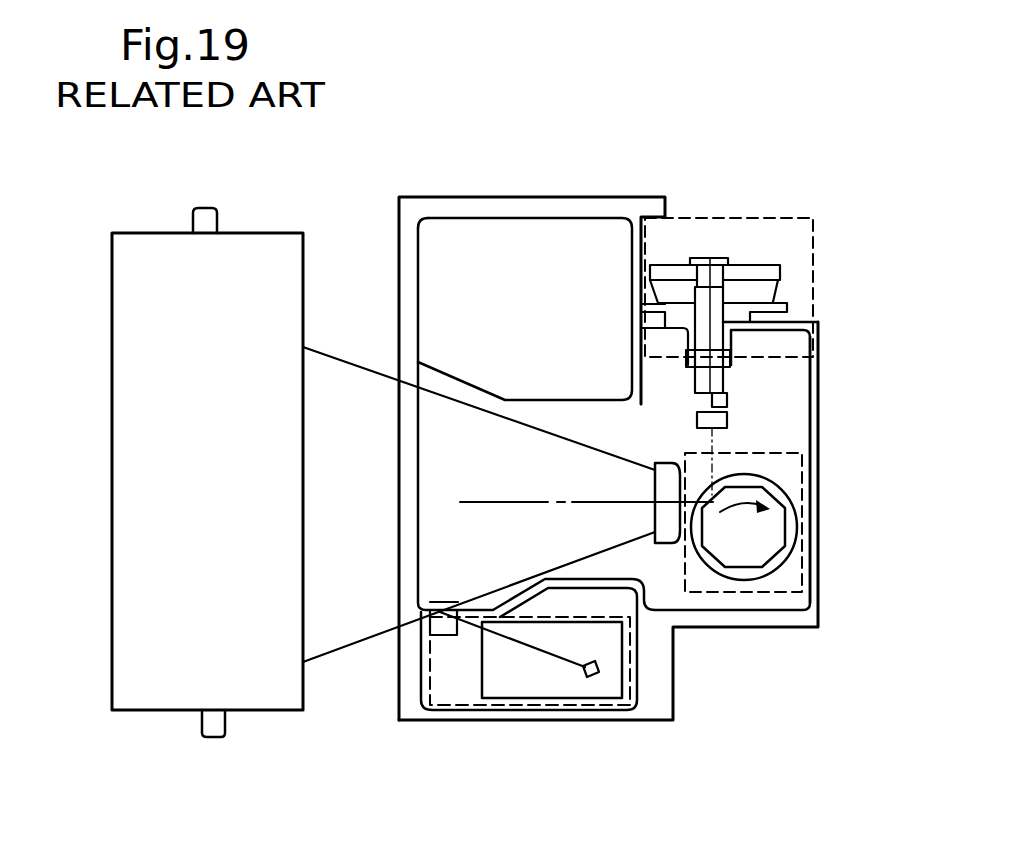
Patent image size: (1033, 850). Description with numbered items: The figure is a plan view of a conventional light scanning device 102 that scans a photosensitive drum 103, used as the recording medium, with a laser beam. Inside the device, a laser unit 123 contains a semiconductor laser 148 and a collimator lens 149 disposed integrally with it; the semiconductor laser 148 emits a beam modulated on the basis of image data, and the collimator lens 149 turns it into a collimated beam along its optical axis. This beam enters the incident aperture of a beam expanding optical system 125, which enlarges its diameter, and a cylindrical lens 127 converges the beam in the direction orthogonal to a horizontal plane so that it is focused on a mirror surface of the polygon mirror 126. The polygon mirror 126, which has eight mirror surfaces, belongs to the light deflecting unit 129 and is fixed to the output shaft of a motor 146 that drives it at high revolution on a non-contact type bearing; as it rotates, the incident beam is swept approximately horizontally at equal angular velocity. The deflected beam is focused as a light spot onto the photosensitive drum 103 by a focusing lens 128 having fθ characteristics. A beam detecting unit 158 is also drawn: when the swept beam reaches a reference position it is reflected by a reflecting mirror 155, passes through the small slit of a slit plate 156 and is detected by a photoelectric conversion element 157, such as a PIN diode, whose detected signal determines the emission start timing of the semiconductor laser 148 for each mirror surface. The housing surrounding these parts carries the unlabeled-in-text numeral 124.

The light scanning device 102 is at (409, 194).
The photosensitive drum 103 is at (113, 532).
The laser unit 123 is at (788, 218).
The housing 124 is at (463, 205).
The beam expanding optical system 125 is at (723, 392).
The polygon mirror 126 is at (777, 498).
The cylindrical lens 127 is at (697, 413).
The focusing lens 128 is at (663, 537).
The light deflecting unit 129 is at (775, 592).
The motor 146 is at (782, 558).
The semiconductor laser 148 is at (706, 258).
The collimator lens 149 is at (717, 297).
The reflecting mirror 155 is at (426, 613).
The slit plate 156 is at (562, 661).
The photoelectric conversion element 157 is at (583, 676).
The beam detecting unit 158 is at (430, 705).